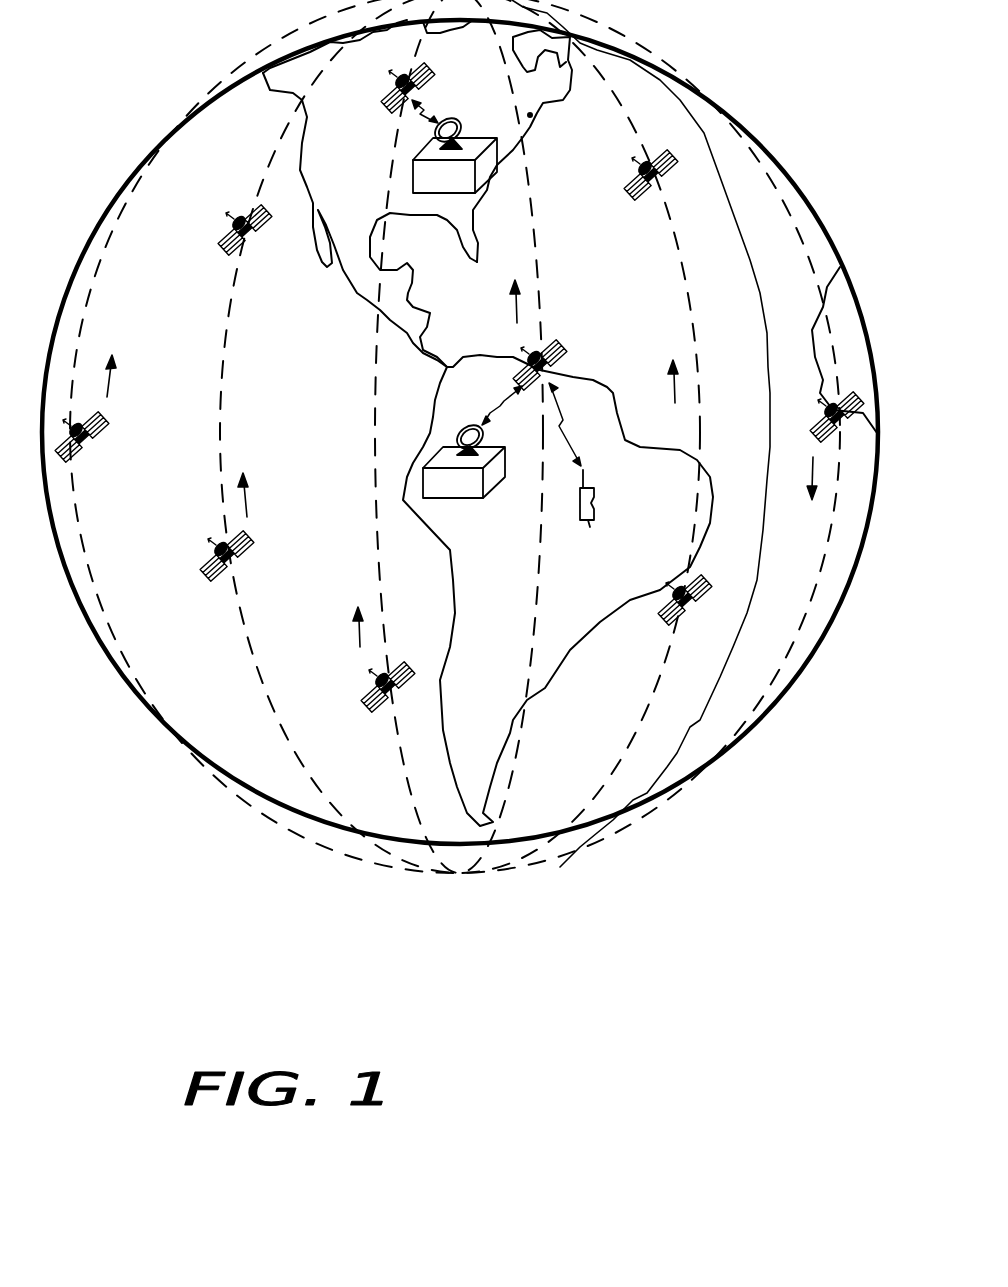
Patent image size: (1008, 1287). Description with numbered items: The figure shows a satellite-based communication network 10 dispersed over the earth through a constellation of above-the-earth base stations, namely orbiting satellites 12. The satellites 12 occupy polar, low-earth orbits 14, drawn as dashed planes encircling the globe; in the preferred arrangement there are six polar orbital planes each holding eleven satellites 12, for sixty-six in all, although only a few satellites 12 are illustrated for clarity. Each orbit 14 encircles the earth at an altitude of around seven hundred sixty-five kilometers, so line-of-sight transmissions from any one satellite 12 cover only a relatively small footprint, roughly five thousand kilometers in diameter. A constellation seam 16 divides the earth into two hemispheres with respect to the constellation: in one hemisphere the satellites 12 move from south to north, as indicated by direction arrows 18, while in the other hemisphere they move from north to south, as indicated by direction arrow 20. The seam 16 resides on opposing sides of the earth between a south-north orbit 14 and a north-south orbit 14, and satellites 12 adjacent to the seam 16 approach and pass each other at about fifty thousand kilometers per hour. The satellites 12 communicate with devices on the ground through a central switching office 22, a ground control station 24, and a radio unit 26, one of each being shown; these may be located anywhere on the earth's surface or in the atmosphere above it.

The satellite-based communication network 10 is at (457, 963).
The satellites 12 is at (383, 116).
The polar low-earth orbits 14 is at (273, 145).
The constellation seam 16 is at (768, 357).
The direction arrows 18 is at (109, 382).
The direction arrow 20 is at (810, 477).
The central switching office 22 is at (464, 498).
The ground control station 24 is at (480, 139).
The radio unit 26 is at (589, 527).